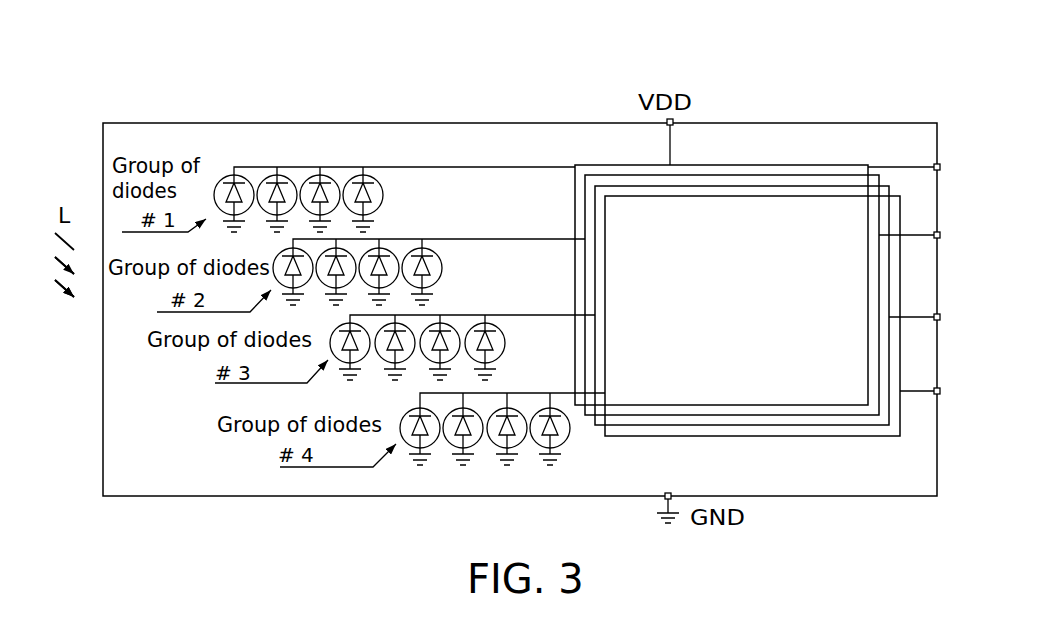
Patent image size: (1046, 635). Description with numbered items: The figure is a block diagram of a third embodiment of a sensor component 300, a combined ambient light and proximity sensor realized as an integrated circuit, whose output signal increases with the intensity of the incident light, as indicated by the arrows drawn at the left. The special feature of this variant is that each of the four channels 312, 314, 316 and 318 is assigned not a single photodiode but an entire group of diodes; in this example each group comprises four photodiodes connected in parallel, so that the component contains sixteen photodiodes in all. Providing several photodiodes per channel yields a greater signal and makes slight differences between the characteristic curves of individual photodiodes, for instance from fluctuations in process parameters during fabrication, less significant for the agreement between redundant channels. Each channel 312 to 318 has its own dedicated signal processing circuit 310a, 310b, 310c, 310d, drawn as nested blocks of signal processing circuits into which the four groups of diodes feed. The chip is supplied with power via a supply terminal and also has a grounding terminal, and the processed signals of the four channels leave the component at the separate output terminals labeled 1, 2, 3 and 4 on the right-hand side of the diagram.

The sensor component 300 is at (465, 62).
The channel 312 is at (433, 167).
The channel 314 is at (525, 239).
The channel 316 is at (540, 315).
The channel 318 is at (557, 393).
The signal processing circuit 310a is at (755, 165).
The signal processing circuit 310b is at (788, 175).
The signal processing circuit 310c is at (859, 180).
The signal processing circuit 310d is at (825, 437).
The output terminal 1 is at (904, 153).
The output terminal 2 is at (909, 222).
The output terminal 3 is at (914, 303).
The output terminal 4 is at (920, 379).